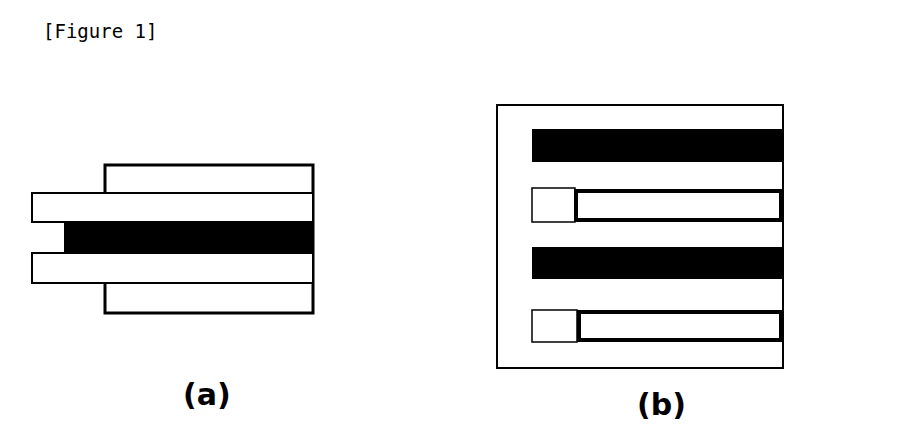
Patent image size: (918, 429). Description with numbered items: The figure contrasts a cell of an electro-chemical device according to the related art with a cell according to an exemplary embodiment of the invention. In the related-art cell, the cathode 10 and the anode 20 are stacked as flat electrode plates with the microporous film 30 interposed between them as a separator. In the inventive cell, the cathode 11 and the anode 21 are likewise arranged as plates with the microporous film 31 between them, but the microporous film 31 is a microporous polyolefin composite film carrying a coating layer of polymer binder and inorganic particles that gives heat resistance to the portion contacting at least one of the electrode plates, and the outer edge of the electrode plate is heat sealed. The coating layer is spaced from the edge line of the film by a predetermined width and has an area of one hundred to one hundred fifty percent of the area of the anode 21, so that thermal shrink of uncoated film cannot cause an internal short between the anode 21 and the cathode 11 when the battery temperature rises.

The cathode of secondary battery according to the related art 10 is at (313, 292).
The anode of secondary battery according to the related art 20 is at (313, 238).
The microporous film of secondary battery according to the related art 30 is at (313, 203).
The cathode of the present invention 11 is at (785, 201).
The anode of the present invention 21 is at (785, 266).
The microporous film of the present invention 31 is at (785, 352).